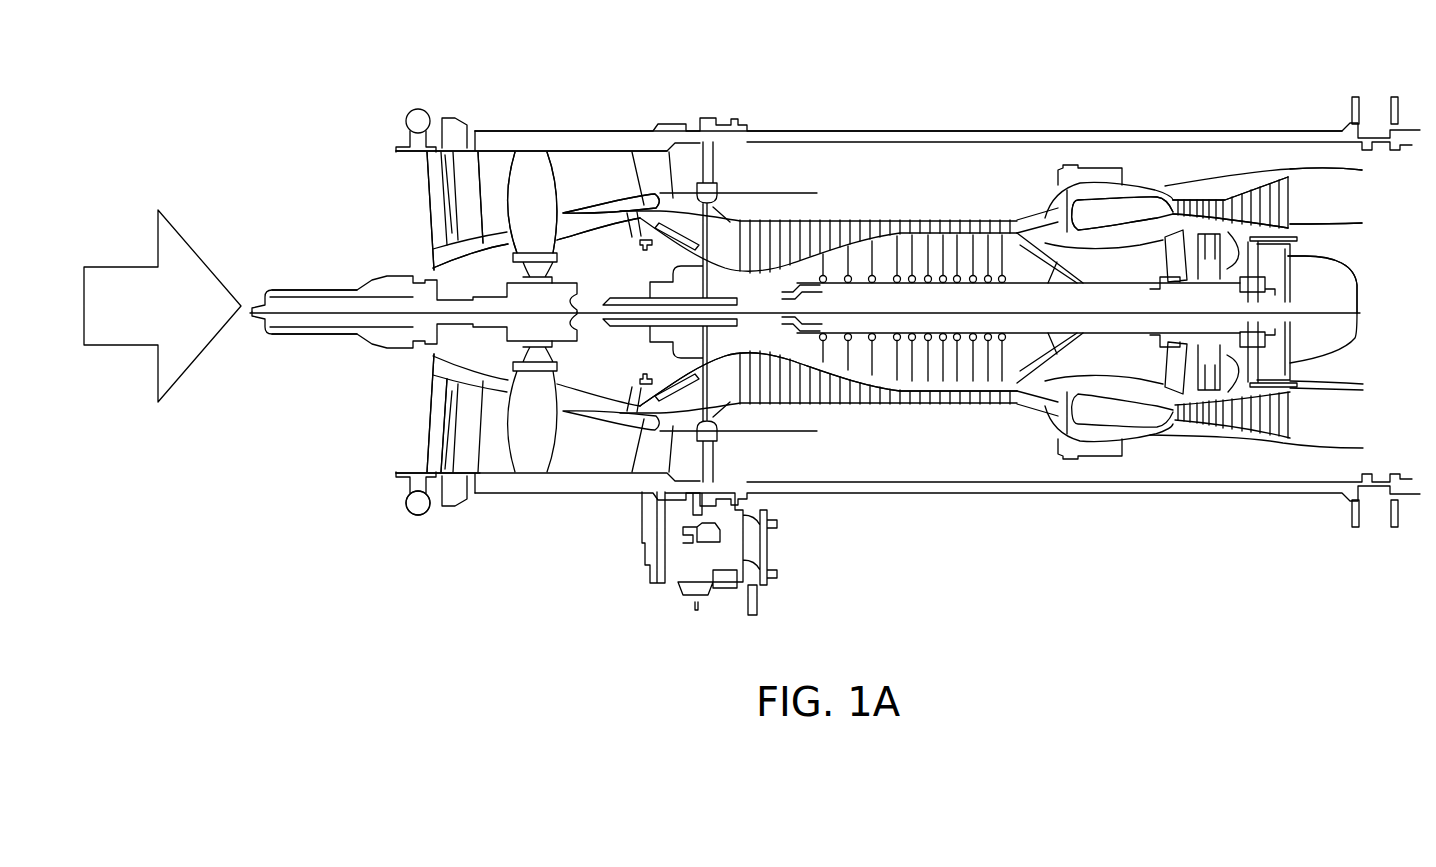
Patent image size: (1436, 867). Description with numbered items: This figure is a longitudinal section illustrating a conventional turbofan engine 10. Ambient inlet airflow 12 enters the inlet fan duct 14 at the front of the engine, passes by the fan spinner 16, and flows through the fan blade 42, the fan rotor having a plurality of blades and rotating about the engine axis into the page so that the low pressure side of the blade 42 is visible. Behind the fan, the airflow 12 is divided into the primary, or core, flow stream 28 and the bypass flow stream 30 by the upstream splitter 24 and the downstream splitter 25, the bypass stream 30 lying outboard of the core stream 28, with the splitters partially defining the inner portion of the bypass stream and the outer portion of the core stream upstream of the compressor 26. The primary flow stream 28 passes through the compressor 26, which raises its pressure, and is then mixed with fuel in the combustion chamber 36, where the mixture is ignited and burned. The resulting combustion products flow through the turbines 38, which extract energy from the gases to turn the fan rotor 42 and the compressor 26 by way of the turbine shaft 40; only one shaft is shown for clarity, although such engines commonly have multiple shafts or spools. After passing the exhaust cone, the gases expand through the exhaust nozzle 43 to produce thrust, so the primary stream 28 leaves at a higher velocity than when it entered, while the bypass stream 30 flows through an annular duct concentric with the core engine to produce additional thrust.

The turbofan engine 10 is at (887, 82).
The ambient inlet airflow 12 is at (127, 318).
The inlet fan duct 14 is at (510, 525).
The fan spinner 16 is at (427, 358).
The upstream splitter 24 is at (440, 227).
The downstream splitter 25 is at (569, 210).
The compressor 26 is at (866, 393).
The primary flow stream 28 is at (600, 222).
The bypass flow stream 30 is at (613, 172).
The combustion chamber 36 is at (1166, 195).
The turbines 38 is at (1280, 171).
The turbine shaft 40 is at (1292, 362).
The fan blade 42 is at (540, 210).
The exhaust nozzle 43 is at (1362, 171).